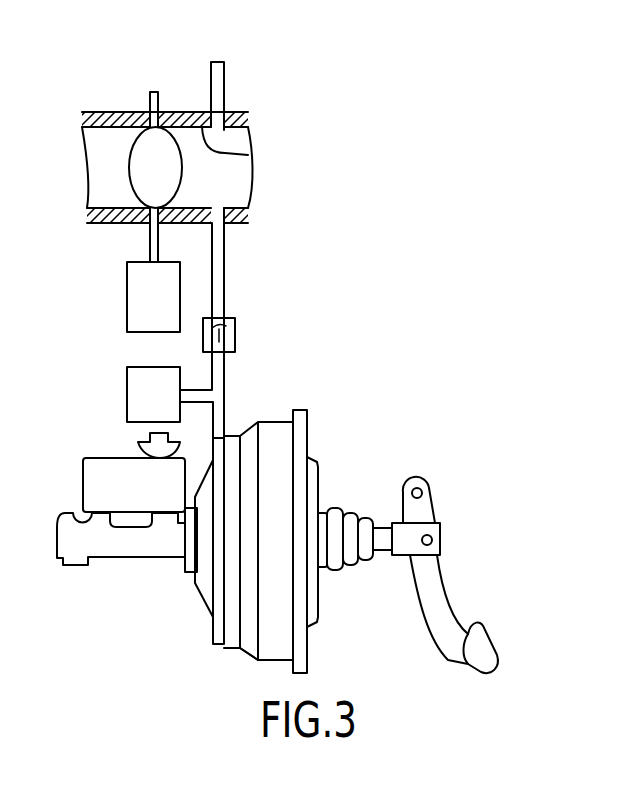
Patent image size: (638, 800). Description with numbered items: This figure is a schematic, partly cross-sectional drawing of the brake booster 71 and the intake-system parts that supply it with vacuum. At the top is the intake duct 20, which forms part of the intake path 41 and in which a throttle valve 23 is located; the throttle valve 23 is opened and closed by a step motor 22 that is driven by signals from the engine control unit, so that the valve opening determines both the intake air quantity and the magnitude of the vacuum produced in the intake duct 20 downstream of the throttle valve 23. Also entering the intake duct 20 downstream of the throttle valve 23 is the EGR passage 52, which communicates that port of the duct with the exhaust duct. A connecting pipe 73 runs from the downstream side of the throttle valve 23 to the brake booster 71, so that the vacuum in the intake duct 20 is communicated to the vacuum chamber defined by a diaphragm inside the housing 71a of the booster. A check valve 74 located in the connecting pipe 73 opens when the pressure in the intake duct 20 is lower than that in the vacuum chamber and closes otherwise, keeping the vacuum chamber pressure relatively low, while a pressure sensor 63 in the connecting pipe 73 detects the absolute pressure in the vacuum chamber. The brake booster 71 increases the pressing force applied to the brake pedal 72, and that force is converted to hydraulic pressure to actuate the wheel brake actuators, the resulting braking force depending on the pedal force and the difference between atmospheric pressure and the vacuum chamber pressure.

The intake duct 20 is at (108, 112).
The throttle valve 23 is at (128, 150).
The EGR passage 52 is at (224, 90).
The intake path 41 is at (246, 155).
The step motor 22 is at (127, 300).
The connecting pipe 73 is at (224, 298).
The check valve 74 is at (235, 325).
The pressure sensor 63 is at (127, 388).
The brake booster 71 is at (178, 655).
The housing 71a is at (267, 660).
The brake pedal 72 is at (493, 638).